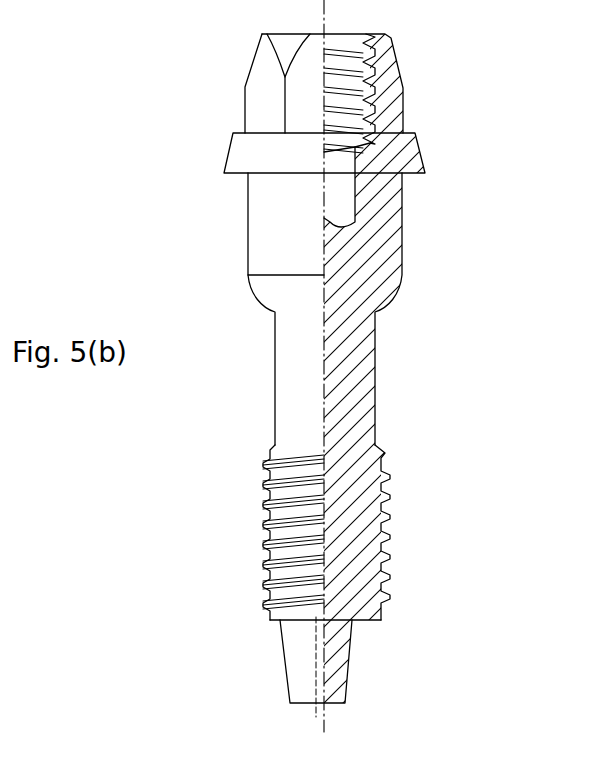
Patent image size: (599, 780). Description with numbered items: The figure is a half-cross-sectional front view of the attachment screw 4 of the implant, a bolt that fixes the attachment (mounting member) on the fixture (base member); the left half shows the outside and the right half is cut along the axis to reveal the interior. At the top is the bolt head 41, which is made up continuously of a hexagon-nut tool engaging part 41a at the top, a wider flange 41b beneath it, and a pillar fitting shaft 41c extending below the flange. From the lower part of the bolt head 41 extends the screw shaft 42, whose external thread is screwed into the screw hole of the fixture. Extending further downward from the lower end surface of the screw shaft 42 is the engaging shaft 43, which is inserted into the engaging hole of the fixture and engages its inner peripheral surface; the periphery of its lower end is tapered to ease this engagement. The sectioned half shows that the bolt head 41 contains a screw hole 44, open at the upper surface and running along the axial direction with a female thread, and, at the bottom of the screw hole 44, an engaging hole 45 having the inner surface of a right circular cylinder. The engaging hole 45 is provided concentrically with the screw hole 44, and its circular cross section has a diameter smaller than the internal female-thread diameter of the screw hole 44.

The attachment screw 4 is at (311, 390).
The bolt head 41 is at (342, 222).
The hexagon-nut tool engaging part 41a is at (403, 76).
The flange 41b is at (419, 150).
The pillar fitting shaft 41c is at (402, 220).
The screw shaft 42 is at (263, 527).
The engaging shaft 43 is at (324, 657).
The screw hole 44 is at (387, 37).
The engaging hole 45 is at (323, 227).